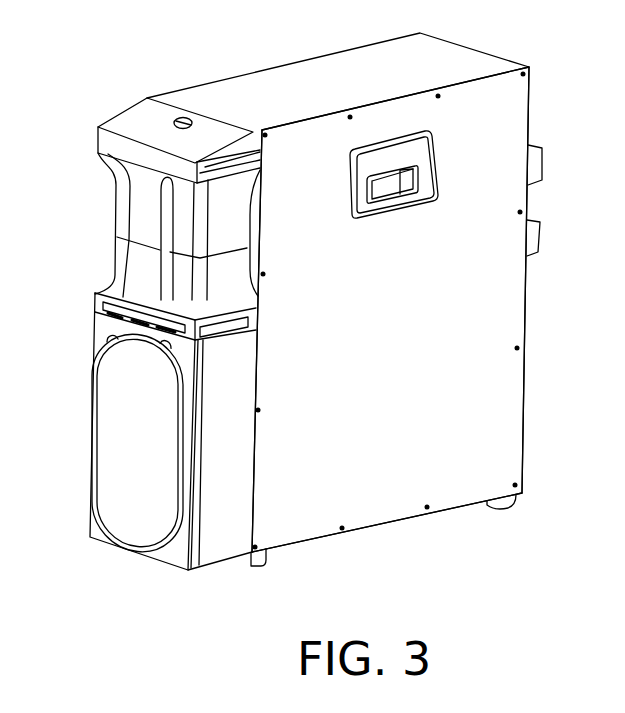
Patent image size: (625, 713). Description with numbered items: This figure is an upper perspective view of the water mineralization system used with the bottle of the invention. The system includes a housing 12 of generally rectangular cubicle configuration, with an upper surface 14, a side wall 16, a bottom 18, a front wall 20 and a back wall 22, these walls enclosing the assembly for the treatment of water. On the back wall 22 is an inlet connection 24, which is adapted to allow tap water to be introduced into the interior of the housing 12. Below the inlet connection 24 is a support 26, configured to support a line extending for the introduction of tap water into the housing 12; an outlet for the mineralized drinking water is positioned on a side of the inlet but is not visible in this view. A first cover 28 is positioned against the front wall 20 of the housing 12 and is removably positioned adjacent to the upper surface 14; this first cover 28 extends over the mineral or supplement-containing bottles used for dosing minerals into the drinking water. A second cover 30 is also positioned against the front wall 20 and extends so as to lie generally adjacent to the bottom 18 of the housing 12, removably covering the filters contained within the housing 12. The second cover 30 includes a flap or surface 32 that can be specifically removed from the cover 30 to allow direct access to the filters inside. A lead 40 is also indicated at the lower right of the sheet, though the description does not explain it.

The housing 12 is at (513, 317).
The upper surface 14 is at (448, 58).
The side wall 16 is at (427, 337).
The bottom 18 is at (453, 512).
The front wall 20 is at (257, 350).
The back wall 22 is at (532, 110).
The inlet connection 24 is at (542, 162).
The support 26 is at (540, 240).
The first cover 28 is at (130, 120).
The second cover 30 is at (215, 553).
The flap or surface 32 is at (112, 417).
The cable 40 is at (624, 641).